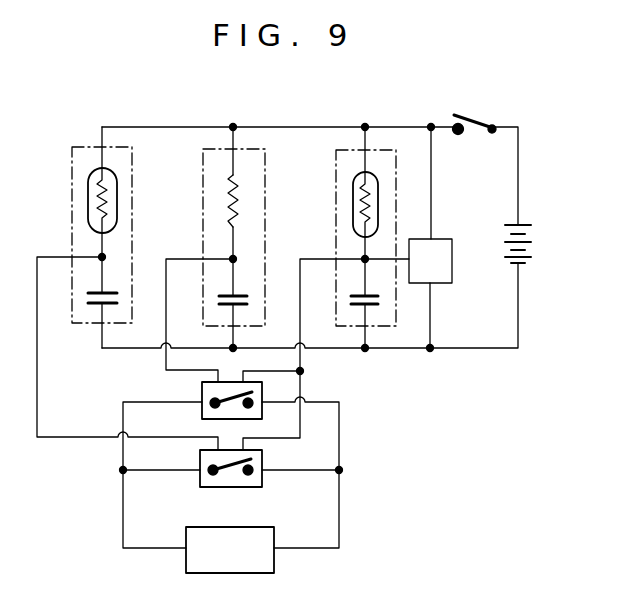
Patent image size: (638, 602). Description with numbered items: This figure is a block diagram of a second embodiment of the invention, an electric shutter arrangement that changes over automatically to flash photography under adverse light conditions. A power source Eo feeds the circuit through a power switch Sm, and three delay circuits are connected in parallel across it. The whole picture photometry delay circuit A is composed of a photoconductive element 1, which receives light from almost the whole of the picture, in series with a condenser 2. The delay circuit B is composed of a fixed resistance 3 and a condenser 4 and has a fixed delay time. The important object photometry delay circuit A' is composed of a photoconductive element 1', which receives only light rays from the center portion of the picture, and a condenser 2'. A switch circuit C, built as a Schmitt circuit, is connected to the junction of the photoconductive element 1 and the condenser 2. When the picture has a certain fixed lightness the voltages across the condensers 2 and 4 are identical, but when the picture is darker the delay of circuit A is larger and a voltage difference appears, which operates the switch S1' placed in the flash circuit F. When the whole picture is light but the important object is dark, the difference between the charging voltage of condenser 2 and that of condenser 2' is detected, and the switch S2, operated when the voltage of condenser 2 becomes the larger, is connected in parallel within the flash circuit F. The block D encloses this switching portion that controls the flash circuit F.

The photoconductive element 1 is at (388, 193).
The photoconductive element 1' is at (81, 192).
The condenser 2 is at (366, 303).
The condenser 2' is at (107, 302).
The fixed resistance 3 is at (241, 193).
The condenser 4 is at (234, 303).
The whole picture photometry delay circuit A is at (366, 207).
The important object photometry delay circuit A' is at (102, 203).
The delay circuit B is at (218, 158).
The switch circuit C is at (438, 248).
The control circuit D is at (327, 494).
The flash circuit F is at (230, 550).
The power switch Sm is at (478, 119).
The power source Eo is at (533, 244).
The first switch S1' is at (216, 400).
The switch S2 is at (214, 467).